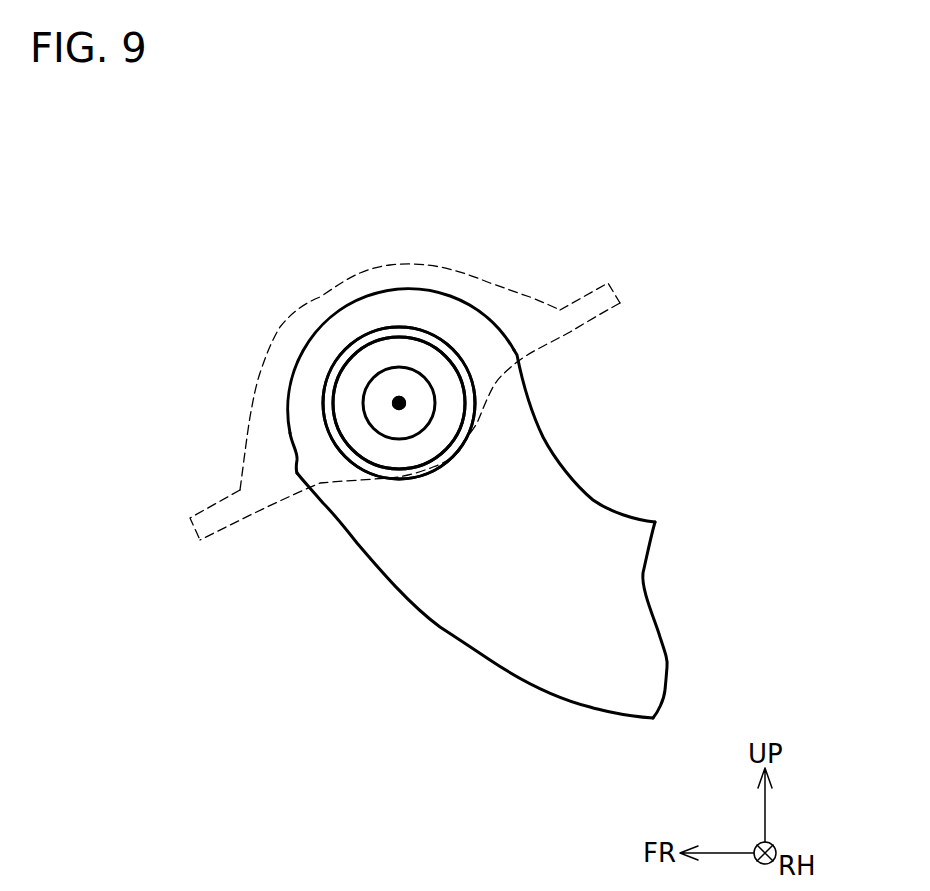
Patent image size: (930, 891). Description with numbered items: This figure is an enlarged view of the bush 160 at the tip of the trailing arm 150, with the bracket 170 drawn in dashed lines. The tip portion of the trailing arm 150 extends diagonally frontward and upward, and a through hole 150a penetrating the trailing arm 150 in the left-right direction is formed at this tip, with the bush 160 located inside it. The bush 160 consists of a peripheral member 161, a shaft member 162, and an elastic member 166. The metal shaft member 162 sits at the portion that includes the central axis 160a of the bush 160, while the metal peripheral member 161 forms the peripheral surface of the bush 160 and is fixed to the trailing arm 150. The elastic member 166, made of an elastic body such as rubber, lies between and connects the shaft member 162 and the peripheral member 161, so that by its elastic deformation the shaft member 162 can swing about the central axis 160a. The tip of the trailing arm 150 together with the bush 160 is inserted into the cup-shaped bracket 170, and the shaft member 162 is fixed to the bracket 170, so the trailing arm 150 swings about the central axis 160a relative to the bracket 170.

The trailing arm 150 is at (535, 463).
The through hole 150a is at (413, 333).
The bush 160 is at (393, 326).
The central axis 160a is at (392, 400).
The peripheral member 161 is at (367, 387).
The shaft member 162 is at (377, 408).
The elastic member 166 is at (350, 428).
The bracket 170 is at (520, 297).